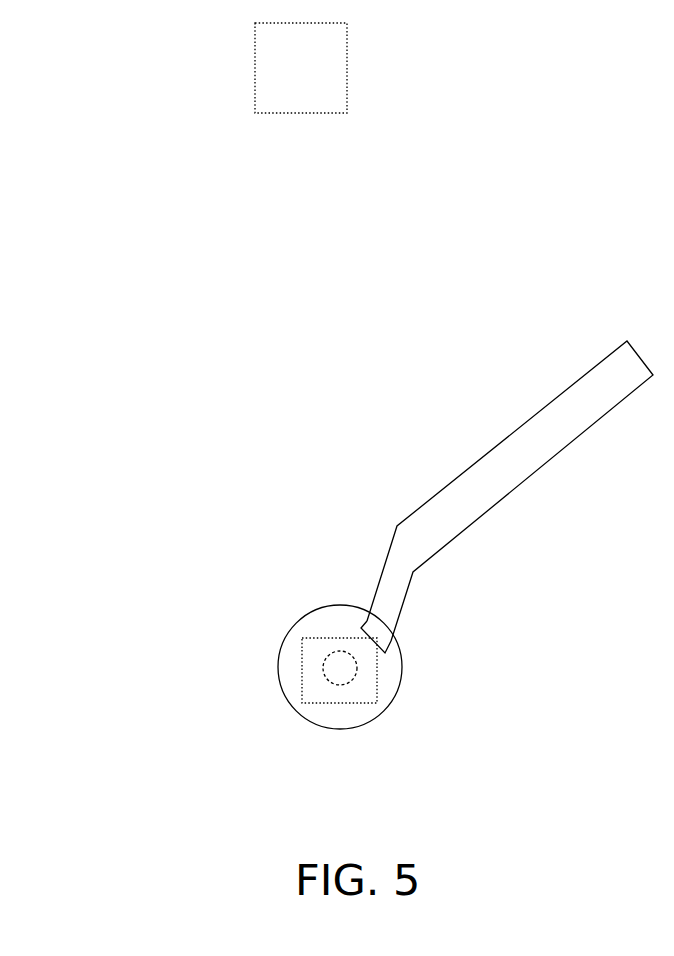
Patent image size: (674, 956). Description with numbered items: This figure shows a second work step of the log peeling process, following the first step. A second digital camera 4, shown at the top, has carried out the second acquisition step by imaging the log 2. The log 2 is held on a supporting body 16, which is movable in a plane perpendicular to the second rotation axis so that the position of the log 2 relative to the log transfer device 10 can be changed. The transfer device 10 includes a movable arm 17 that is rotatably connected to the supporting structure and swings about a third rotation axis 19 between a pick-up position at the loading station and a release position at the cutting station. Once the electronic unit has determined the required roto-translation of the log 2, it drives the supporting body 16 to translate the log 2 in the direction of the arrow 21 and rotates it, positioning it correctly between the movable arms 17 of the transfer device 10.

The log 2 is at (385, 727).
The second digital camera 4 is at (293, 77).
The log transfer device 10 is at (535, 338).
The supporting body 16 is at (318, 688).
The movable arm 17 is at (482, 493).
The third rotation axis 19 is at (408, 643).
The arrow 21 is at (265, 687).